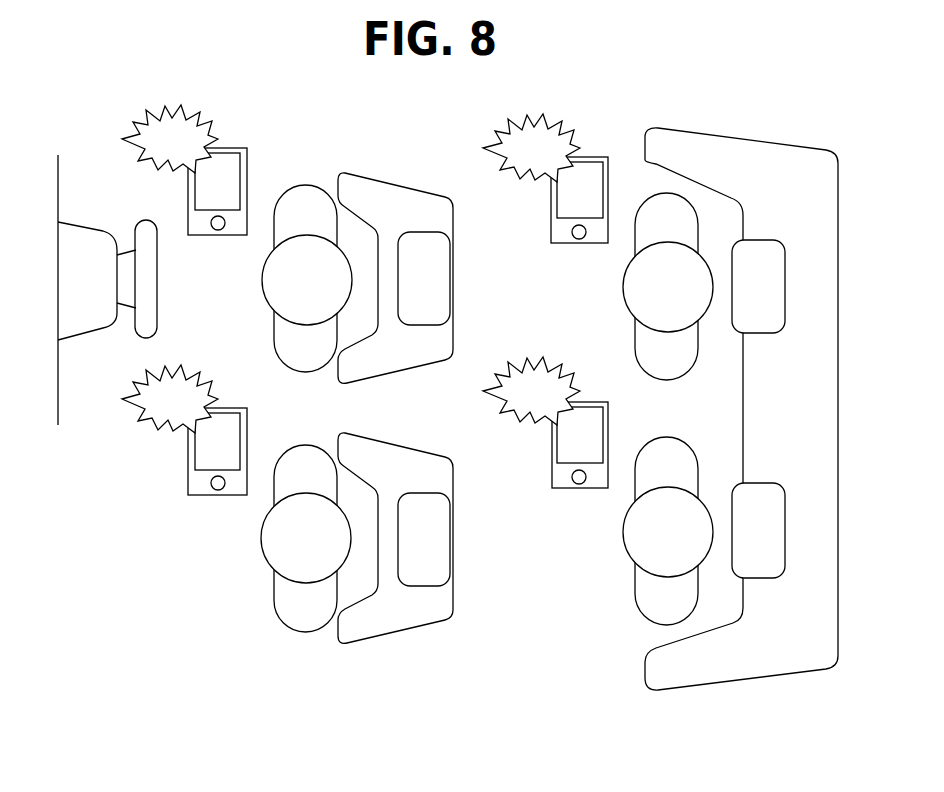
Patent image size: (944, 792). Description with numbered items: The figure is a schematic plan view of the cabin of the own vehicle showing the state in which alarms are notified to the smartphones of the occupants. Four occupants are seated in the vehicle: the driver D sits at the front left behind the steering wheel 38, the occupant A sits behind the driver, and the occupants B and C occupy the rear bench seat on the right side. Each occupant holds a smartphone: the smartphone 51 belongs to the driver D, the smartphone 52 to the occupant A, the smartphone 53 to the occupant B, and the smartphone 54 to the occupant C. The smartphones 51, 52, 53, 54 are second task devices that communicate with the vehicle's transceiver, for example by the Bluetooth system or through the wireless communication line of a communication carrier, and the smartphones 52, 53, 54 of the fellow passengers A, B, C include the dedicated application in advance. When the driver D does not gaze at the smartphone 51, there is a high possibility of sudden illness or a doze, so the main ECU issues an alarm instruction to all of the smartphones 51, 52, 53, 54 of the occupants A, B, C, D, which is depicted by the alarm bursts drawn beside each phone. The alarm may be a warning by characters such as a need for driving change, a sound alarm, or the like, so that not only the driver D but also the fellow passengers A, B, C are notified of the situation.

The steering wheel 38 is at (158, 280).
The smartphone 51 is at (188, 203).
The smartphone 52 is at (188, 463).
The smartphone 53 is at (550, 212).
The smartphone 54 is at (551, 456).
The occupant A is at (272, 590).
The occupant B is at (634, 335).
The occupant C is at (634, 589).
The driver D is at (272, 328).